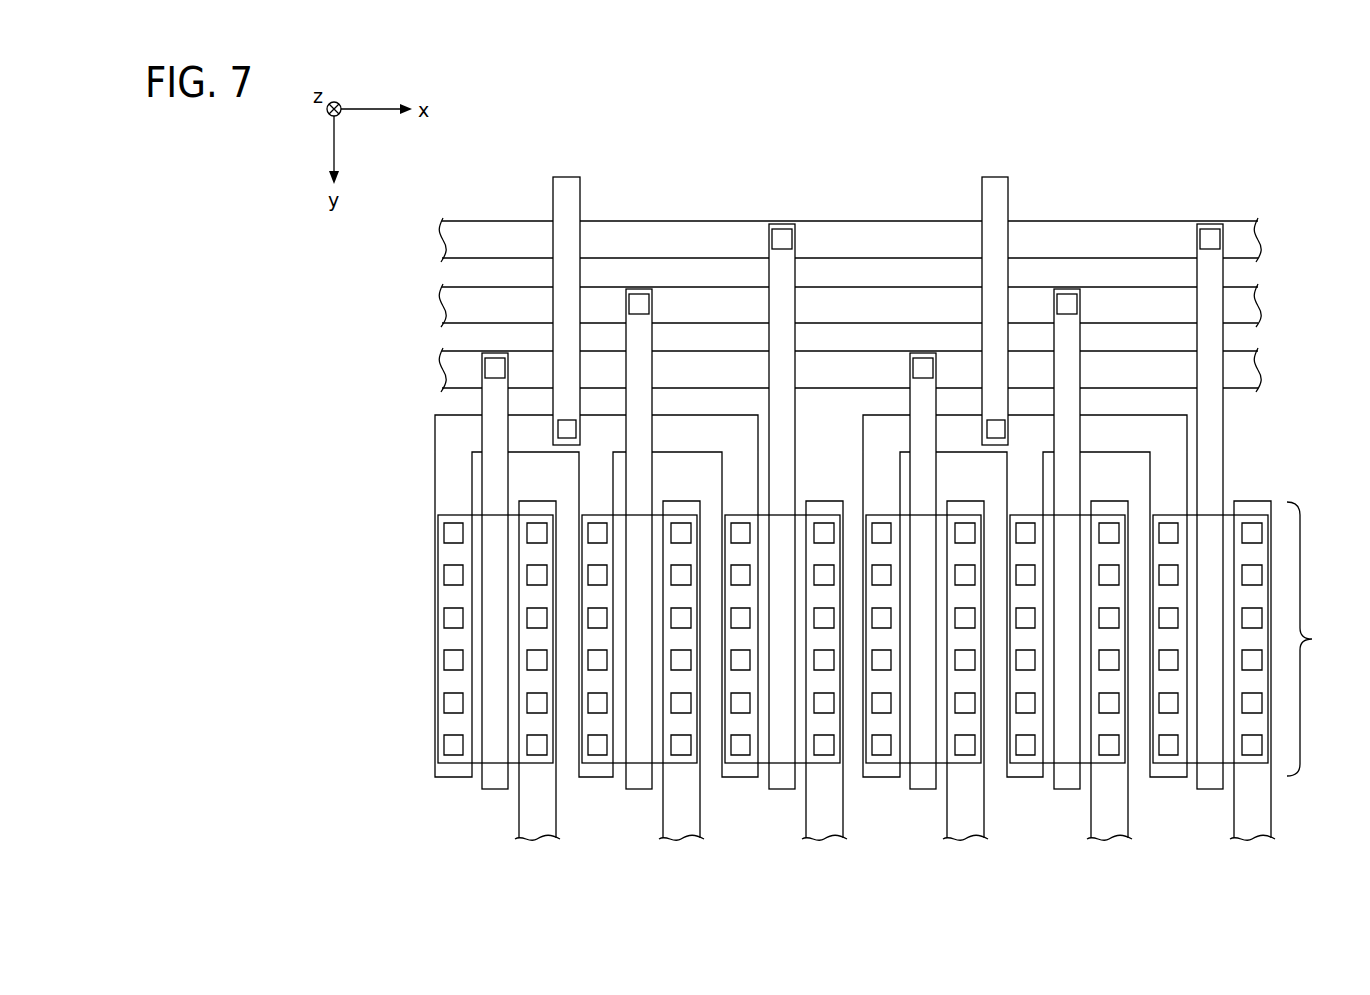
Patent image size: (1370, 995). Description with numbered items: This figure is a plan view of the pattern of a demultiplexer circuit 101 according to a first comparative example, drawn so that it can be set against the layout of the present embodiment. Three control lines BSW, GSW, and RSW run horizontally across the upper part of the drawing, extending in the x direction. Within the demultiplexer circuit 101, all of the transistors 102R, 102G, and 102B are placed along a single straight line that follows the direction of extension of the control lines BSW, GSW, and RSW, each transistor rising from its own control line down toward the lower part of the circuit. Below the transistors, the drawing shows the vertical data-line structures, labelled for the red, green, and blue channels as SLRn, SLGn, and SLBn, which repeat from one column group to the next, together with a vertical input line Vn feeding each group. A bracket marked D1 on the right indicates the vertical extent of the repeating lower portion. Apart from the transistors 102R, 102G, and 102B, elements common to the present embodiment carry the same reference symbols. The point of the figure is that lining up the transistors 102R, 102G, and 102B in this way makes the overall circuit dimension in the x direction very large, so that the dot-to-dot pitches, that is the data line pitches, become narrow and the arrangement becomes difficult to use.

The demultiplexer circuit 101 is at (877, 166).
The transistor 102R is at (495, 822).
The transistor 102G is at (639, 822).
The transistor 102B is at (782, 822).
The control line BSW is at (449, 241).
The control line GSW is at (449, 306).
The control line RSW is at (449, 371).
The scan/voltage line n Vn is at (567, 188).
The red signal line n SLRn is at (535, 826).
The green signal line n SLGn is at (679, 826).
The blue signal line n SLBn is at (822, 826).
The pixel electrode length D1 is at (1316, 639).